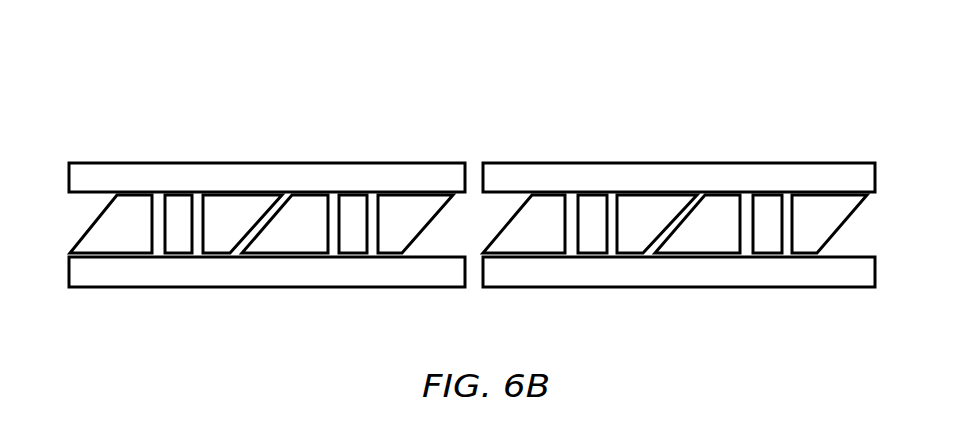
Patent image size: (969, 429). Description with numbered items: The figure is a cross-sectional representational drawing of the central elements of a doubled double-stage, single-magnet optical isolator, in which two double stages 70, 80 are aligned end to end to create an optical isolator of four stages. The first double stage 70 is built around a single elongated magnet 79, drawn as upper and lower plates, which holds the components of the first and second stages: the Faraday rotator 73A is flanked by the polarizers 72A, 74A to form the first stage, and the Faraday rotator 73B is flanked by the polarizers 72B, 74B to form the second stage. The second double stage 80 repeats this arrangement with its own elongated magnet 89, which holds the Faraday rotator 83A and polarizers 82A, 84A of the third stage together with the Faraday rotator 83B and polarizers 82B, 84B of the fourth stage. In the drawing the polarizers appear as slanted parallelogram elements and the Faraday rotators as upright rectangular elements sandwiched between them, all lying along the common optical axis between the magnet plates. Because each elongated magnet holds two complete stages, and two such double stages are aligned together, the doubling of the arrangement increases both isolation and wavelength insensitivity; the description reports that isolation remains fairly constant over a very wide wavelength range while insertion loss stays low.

The first double stage 70 is at (255, 230).
The second double stage 80 is at (691, 177).
The elongated magnet 79 is at (267, 228).
The elongated magnet 89 is at (679, 226).
The polarizer 72A is at (94, 227).
The polarizer 72B is at (288, 260).
The Faraday rotator 73A is at (151, 192).
The Faraday rotator 73B is at (368, 192).
The polarizer 74A is at (246, 192).
The polarizer 74B is at (428, 192).
The polarizer 82A is at (540, 260).
The polarizer 82B is at (713, 260).
The Faraday rotator 83A is at (572, 192).
The Faraday rotator 83B is at (791, 260).
The polarizer 84A is at (657, 192).
The polarizer 84B is at (846, 224).